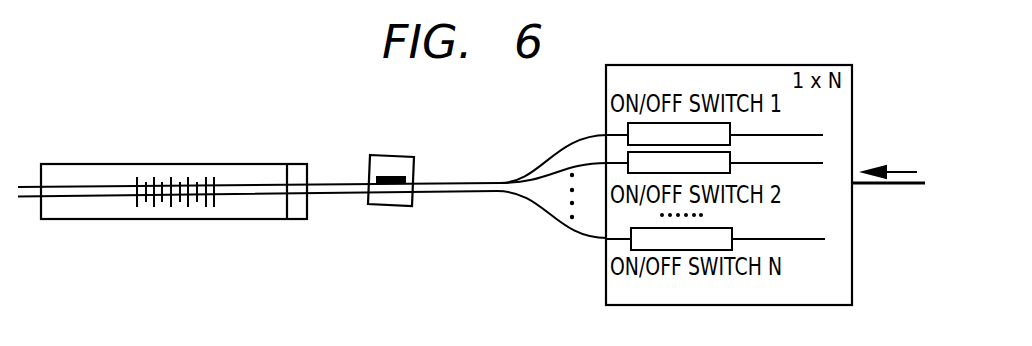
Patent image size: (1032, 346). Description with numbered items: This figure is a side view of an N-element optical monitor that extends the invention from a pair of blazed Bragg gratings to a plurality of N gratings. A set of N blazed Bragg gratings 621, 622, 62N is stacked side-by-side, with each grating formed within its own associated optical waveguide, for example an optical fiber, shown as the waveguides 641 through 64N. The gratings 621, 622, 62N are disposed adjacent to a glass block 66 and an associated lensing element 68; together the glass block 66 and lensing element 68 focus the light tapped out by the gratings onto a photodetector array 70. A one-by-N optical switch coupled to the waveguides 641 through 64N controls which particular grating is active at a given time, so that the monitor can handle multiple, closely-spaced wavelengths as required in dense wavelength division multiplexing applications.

The glass block 66 is at (75, 172).
The first blazed Bragg grating 621 is at (172, 182).
The second blazed Bragg grating 622 is at (190, 182).
The Nth blazed Bragg grating 62N is at (213, 200).
The lensing element 68 is at (302, 212).
The photodetector array 70 is at (412, 205).
The first optical waveguide 641 is at (568, 145).
The Nth optical waveguide 64N is at (553, 222).